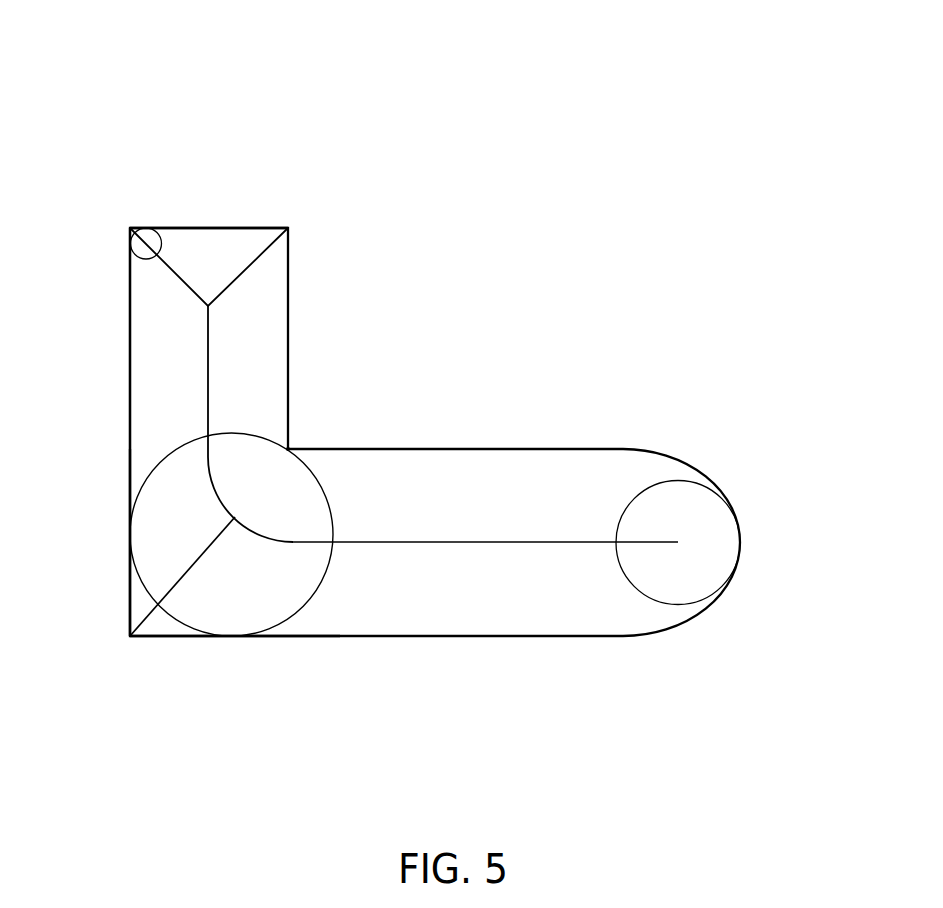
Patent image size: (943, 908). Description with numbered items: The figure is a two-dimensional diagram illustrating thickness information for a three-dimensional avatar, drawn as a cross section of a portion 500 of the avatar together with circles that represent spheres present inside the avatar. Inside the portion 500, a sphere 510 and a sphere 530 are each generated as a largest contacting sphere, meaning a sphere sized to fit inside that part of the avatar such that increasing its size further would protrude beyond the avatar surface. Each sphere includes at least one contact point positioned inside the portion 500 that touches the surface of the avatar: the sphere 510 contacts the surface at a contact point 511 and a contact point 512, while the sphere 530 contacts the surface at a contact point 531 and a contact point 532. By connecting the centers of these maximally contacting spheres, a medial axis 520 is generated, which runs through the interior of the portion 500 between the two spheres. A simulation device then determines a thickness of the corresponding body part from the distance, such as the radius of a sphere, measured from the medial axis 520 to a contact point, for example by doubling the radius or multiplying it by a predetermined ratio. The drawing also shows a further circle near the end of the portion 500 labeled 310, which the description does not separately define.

The portion of a 3D avatar 500 is at (542, 61).
The sphere 510 is at (138, 229).
The contact point 511 is at (130, 243).
The contact point 512 is at (146, 228).
The medial axis 520 is at (208, 343).
The sphere 530 is at (138, 489).
The contact point 531 is at (130, 542).
The contact point 532 is at (232, 636).
The light source 310 is at (740, 542).